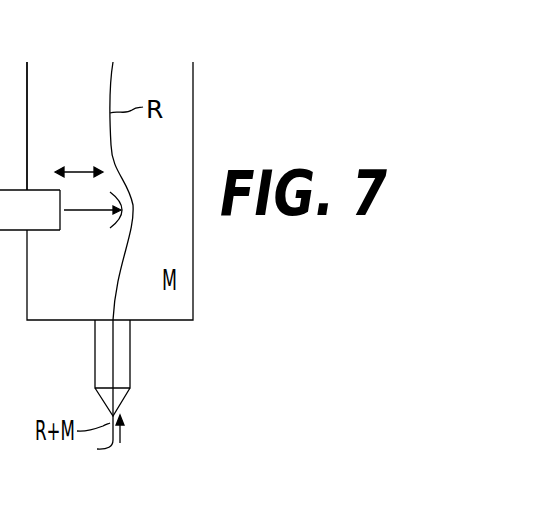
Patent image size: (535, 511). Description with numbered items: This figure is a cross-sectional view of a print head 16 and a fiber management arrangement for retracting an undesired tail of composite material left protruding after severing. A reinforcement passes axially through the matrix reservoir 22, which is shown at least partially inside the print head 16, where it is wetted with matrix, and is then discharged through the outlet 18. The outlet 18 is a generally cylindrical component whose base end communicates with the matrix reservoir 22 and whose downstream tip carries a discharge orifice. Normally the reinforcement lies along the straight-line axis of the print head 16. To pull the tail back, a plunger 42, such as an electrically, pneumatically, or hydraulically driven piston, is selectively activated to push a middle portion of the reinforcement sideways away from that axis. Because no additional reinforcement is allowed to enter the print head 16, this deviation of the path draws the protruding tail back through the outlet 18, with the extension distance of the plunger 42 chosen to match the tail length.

The print head 16 is at (202, 41).
The matrix reservoir 22 is at (53, 93).
The plunger 42 is at (36, 221).
The outlet 18 is at (131, 363).